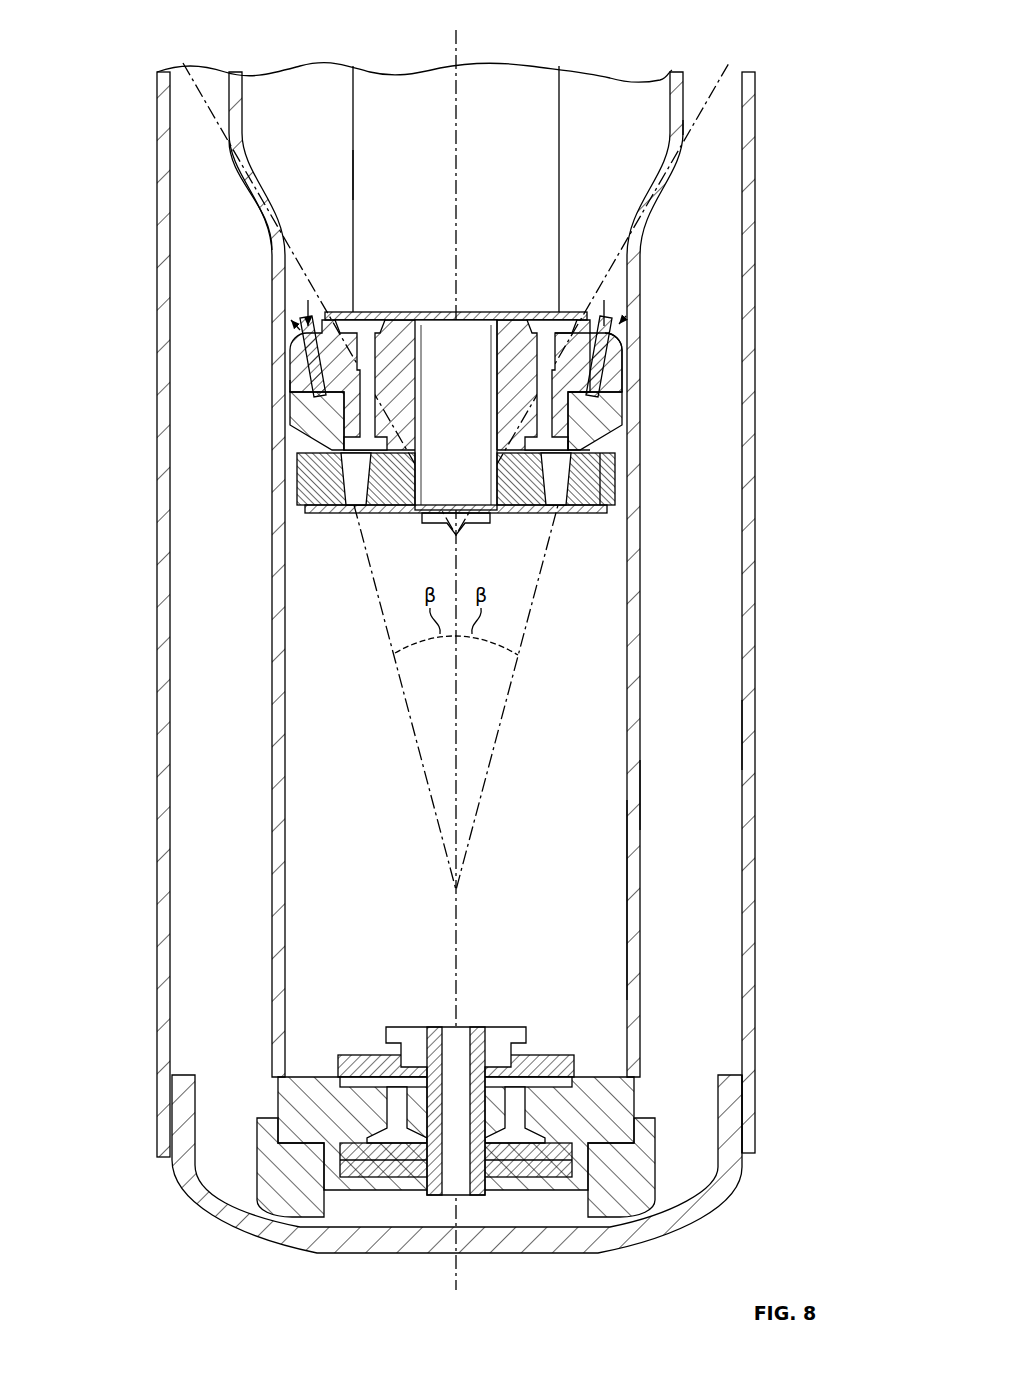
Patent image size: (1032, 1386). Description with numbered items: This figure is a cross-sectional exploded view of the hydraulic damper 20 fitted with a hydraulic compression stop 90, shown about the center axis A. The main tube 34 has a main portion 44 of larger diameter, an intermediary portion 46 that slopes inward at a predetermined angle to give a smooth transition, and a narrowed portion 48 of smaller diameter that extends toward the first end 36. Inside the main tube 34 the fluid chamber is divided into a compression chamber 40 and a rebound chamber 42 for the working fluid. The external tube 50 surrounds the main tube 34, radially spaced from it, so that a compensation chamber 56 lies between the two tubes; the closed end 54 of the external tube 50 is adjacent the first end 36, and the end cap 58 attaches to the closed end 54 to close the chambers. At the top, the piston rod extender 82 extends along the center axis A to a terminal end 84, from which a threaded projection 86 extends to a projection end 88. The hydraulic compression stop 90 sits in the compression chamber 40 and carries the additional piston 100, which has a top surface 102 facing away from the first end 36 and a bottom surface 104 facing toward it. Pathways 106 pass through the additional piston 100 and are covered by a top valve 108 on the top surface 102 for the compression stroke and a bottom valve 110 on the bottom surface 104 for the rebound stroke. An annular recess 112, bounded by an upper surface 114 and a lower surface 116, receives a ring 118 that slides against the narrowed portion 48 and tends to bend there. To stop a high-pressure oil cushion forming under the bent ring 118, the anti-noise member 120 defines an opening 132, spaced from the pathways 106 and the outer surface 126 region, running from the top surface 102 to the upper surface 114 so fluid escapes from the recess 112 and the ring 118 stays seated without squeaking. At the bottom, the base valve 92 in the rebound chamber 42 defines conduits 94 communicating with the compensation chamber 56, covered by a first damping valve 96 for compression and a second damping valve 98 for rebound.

The hydraulic damper 20 is at (368, 46).
The main tube 34 is at (689, 145).
The first end 36 is at (633, 972).
The compression chamber 40 is at (626, 810).
The rebound chamber 42 is at (720, 72).
The main portion 44 is at (236, 72).
The intermediary portion 46 is at (240, 197).
The narrowed portion 48 is at (637, 855).
The external tube 50 is at (749, 592).
The closed end 54 is at (745, 1147).
The compensation chamber 56 is at (740, 747).
The end cap 58 is at (722, 1193).
The piston rod extender 82 is at (421, 86).
The terminal end 84 is at (385, 312).
The threaded projection 86 is at (432, 318).
The projection end 88 is at (470, 525).
The hydraulic compression stop 90 is at (325, 488).
The base valve 92 is at (314, 1143).
The conduits 94 is at (513, 1098).
The first damping valve 96 is at (340, 1065).
The second damping valve 98 is at (505, 1165).
The additional piston 100 is at (588, 316).
The top surface 102 is at (508, 314).
The bottom surface 104 is at (376, 514).
The pathways 106 is at (340, 368).
The top valve 108 is at (544, 316).
The bottom valve 110 is at (603, 516).
The recess 112 is at (312, 447).
The upper surface 114 is at (612, 378).
The lower surface 116 is at (606, 455).
The ring 118 is at (614, 430).
The anti-noise member 120 is at (623, 404).
The outer surface 126 is at (293, 360).
The opening 132 is at (298, 388).
The center axis A is at (456, 55).